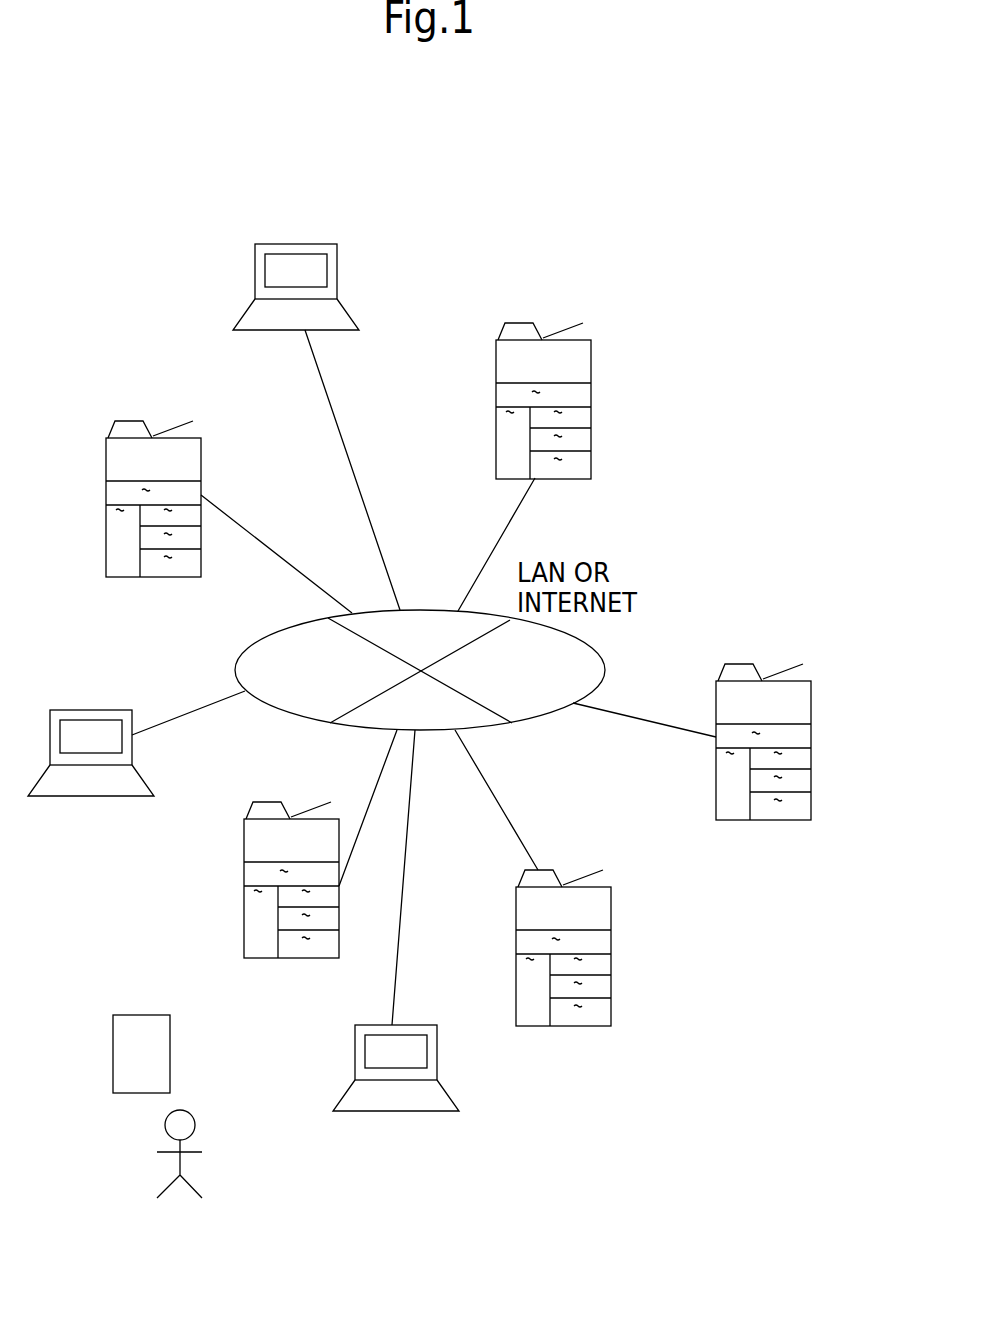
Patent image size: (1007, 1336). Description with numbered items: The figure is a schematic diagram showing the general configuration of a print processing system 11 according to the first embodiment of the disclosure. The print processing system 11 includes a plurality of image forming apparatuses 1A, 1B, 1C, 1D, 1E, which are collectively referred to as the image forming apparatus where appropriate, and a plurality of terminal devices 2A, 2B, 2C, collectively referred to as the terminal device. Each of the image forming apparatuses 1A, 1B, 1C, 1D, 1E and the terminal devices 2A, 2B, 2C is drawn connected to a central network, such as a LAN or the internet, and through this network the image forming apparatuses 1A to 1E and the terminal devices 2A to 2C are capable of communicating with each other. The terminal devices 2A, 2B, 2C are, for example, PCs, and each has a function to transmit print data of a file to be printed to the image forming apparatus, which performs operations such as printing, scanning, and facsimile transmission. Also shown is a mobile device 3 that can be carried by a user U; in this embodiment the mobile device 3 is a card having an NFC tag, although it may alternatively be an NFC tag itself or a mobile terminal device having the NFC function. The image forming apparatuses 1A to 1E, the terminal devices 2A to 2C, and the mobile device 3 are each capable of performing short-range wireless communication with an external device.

The print processing system 11 is at (684, 193).
The image forming apparatus 1A is at (591, 370).
The image forming apparatus 1B is at (201, 470).
The image forming apparatus 1C is at (300, 958).
The image forming apparatus 1D is at (572, 1026).
The image forming apparatus 1E is at (811, 710).
The terminal device 2A is at (337, 270).
The terminal device 2B is at (85, 797).
The terminal device 2C is at (388, 1110).
The mobile device 3 is at (170, 1050).
The user U is at (198, 1167).